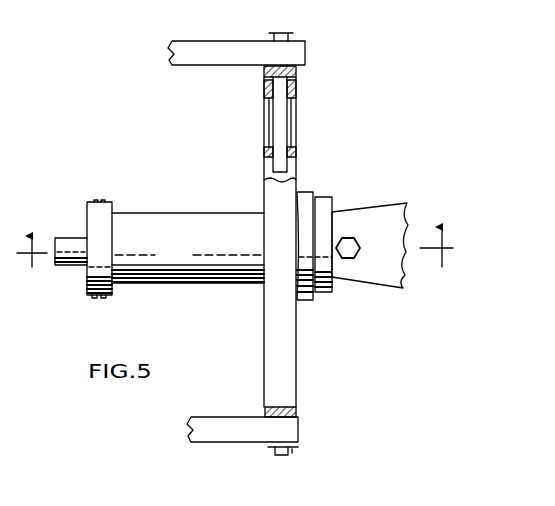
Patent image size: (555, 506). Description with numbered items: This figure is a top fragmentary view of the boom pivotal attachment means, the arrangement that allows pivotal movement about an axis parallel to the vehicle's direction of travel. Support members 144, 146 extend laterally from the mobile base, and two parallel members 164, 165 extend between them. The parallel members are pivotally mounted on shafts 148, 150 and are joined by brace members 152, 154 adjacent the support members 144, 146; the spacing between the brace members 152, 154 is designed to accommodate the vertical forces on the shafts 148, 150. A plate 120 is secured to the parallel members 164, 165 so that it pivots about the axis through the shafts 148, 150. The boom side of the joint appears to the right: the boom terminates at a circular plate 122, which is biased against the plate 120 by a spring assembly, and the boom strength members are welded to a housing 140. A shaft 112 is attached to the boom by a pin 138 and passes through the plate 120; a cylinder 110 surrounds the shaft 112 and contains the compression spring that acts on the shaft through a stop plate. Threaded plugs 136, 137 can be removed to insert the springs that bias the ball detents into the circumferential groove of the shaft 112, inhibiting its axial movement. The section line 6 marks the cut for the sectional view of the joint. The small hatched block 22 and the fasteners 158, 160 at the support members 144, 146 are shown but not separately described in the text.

The section line 6- 6 is at (234, 245).
The mounting block 22 is at (296, 72).
The cylinder 110 is at (148, 228).
The shaft 112 is at (62, 240).
The plate 120 is at (303, 197).
The circular plate 122 is at (322, 200).
The threaded plug 136 is at (97, 297).
The threaded plug 137 is at (98, 200).
The pin 138 is at (352, 248).
The housing 140 is at (402, 215).
The support member 144 is at (222, 52).
The support member 146 is at (238, 423).
The shaft 148 is at (280, 110).
The shaft 150 is at (277, 448).
The brace member 152 is at (263, 90).
The brace member 154 is at (265, 155).
The upper fastener 158 is at (288, 35).
The lower fastener nut 160 is at (292, 448).
The parallel member 164 is at (274, 322).
The parallel member 165 is at (290, 127).